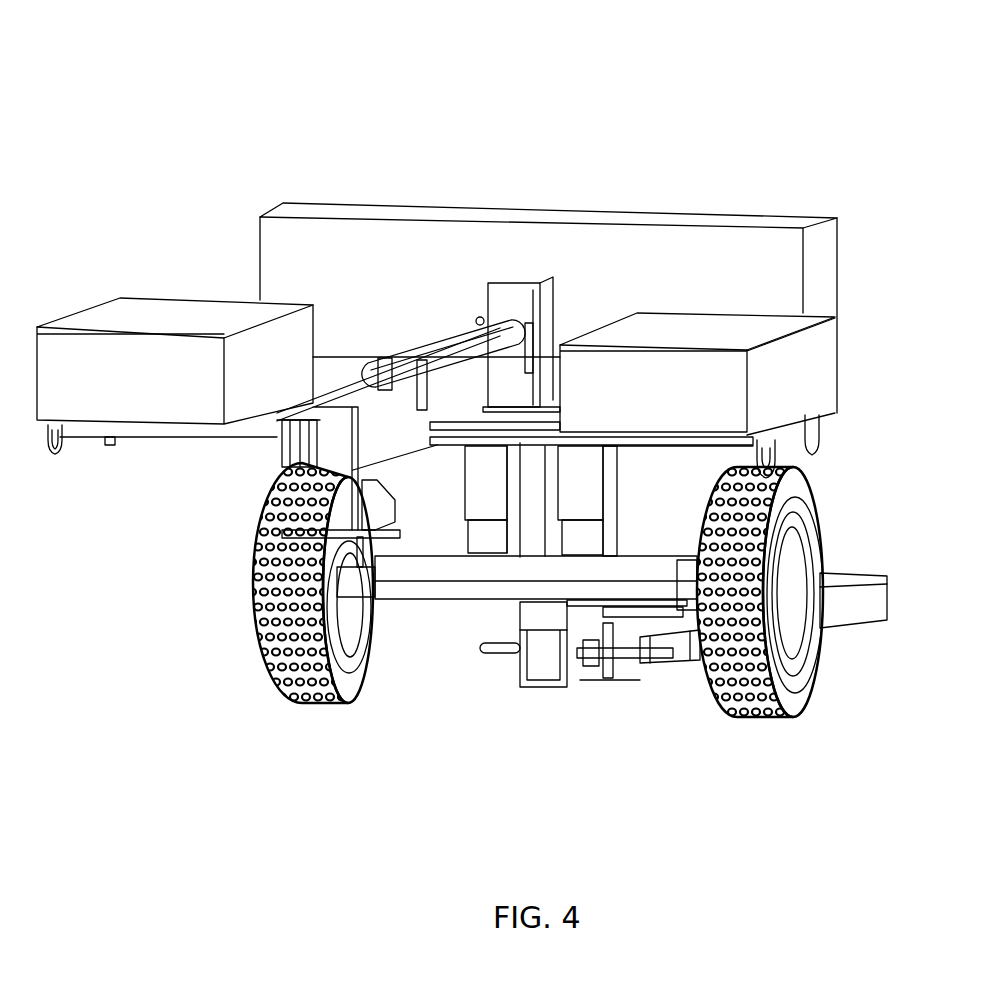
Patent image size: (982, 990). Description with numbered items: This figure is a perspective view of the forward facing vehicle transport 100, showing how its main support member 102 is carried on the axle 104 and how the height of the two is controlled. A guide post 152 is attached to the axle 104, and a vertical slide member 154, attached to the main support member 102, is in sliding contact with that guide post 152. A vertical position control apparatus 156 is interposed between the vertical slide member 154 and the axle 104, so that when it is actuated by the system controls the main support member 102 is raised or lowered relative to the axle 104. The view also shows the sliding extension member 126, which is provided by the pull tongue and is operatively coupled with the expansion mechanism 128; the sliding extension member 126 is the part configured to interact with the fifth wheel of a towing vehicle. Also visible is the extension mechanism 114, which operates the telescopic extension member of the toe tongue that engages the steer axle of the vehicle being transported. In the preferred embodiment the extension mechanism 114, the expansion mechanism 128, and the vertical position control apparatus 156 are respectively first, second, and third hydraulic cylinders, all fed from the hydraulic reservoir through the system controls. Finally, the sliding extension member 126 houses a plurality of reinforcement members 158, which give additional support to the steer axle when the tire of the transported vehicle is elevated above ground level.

The forward facing vehicle transport 100 is at (620, 128).
The main support member 102 is at (582, 667).
The axle 104 is at (420, 580).
The extension mechanism 114 is at (668, 645).
The sliding extension member 126 is at (380, 420).
The expansion mechanism 128 is at (455, 338).
The guide post 152 is at (578, 535).
The vertical slide member 154 is at (592, 471).
The vertical position control apparatus 156 is at (620, 548).
The reinforcement members 158 is at (273, 447).